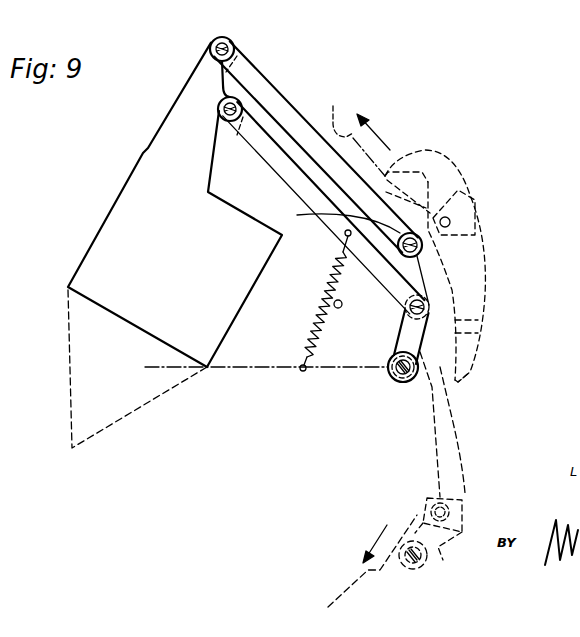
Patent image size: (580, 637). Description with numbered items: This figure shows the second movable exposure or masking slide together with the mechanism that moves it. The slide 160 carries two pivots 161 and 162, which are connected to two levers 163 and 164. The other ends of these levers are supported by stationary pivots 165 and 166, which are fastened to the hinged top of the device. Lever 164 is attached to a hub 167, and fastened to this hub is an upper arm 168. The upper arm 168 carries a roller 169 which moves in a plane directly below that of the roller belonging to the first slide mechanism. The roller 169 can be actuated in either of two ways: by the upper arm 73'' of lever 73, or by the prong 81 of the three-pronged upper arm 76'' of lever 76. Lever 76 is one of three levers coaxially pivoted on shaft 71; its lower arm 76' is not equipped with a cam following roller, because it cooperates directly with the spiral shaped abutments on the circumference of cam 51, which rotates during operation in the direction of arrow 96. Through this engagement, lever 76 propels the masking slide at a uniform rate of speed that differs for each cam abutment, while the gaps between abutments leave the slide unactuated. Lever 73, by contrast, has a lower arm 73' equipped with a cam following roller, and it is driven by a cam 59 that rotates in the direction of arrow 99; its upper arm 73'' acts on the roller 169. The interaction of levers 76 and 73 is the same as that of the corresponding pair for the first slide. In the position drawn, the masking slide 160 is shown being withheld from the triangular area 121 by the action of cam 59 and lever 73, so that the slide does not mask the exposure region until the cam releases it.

The masking slide 160 is at (113, 205).
The pivot 161 is at (233, 43).
The pivot 162 is at (218, 112).
The lever 163 is at (272, 92).
The lever 164 is at (278, 173).
The stationary pivot 165 is at (297, 215).
The stationary pivot 166 is at (407, 300).
The hub 167 is at (432, 302).
The upper arm 168 is at (403, 332).
The roller 169 is at (385, 370).
The triangular area 121 is at (141, 405).
The cam 51 is at (350, 134).
The arrow 96 is at (376, 132).
The lower arm 76' is at (435, 251).
The lever 76 is at (475, 199).
The shaft 71 is at (453, 220).
The upper arm 76'' is at (481, 281).
The prong 81 is at (473, 357).
The upper arm 73'' is at (425, 424).
The lever 73 is at (459, 499).
The lower arm 73' is at (434, 555).
The arrow 99 is at (380, 535).
The cam 59 is at (340, 595).